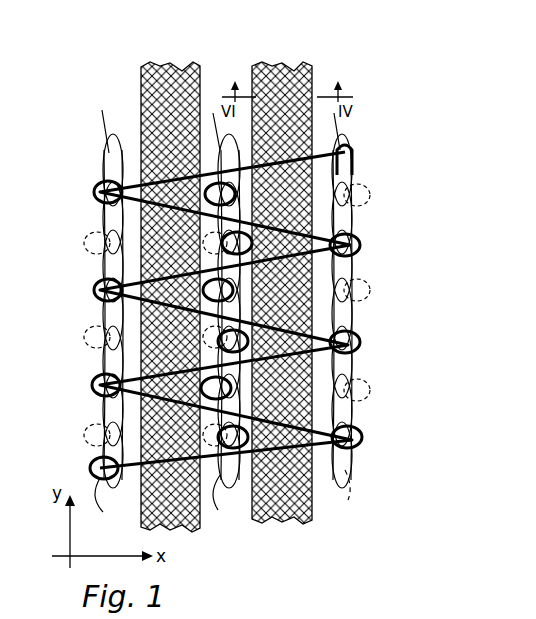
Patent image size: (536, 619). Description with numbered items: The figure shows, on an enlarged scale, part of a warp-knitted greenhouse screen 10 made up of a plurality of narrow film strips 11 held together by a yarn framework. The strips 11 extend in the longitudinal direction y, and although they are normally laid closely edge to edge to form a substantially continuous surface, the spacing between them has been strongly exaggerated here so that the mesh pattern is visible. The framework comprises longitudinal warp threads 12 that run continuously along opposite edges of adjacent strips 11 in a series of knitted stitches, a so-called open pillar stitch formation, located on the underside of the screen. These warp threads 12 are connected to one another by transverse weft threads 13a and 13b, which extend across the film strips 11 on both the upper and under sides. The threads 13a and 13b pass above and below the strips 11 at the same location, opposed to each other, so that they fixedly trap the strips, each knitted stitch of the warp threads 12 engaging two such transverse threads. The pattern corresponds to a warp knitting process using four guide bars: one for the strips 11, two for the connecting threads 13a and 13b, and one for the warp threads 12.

The greenhouse screen 10 is at (243, 282).
The film strips 11 is at (268, 66).
The warp threads 12 is at (105, 160).
The weft thread 13a is at (97, 200).
The weft thread 13b is at (374, 206).